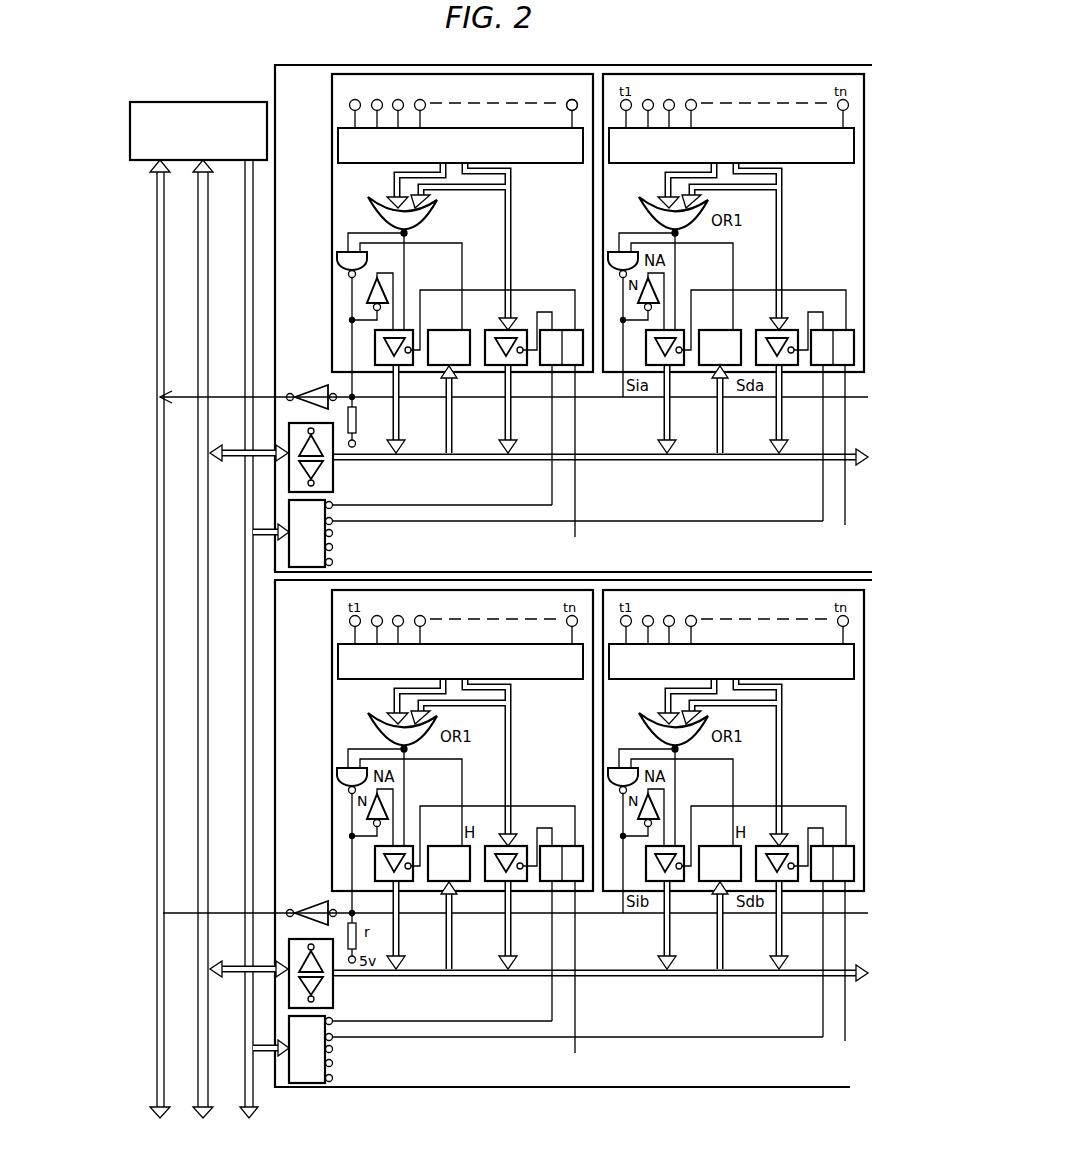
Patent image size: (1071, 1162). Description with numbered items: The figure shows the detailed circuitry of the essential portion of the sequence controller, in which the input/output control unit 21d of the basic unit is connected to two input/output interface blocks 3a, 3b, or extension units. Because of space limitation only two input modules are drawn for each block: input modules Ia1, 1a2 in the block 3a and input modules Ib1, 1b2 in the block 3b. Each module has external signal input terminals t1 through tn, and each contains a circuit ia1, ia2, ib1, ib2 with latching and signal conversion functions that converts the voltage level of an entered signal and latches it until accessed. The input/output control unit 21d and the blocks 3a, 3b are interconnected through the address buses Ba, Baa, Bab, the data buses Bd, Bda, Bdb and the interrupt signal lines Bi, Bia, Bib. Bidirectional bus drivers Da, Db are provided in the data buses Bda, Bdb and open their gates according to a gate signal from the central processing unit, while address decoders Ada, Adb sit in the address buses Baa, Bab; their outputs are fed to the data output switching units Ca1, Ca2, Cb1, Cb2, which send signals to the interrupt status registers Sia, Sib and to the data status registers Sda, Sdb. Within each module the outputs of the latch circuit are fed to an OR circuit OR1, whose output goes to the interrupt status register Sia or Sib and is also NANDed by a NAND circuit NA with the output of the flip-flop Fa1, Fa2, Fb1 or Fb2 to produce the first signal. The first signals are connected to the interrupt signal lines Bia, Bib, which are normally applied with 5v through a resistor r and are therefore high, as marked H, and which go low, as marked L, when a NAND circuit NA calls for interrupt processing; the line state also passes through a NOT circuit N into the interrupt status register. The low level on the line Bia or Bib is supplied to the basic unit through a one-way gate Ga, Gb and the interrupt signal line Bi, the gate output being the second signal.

The input/output control unit 21d is at (193, 102).
The input/output interface block 3a is at (650, 65).
The input/output interface block 3b is at (593, 1087).
The input module Ia1 is at (330, 99).
The input module 1a2 is at (733, 203).
The input module Ib1 is at (438, 740).
The input module 1b2 is at (733, 718).
The latch circuit ia1 is at (460, 145).
The latch circuit ia2 is at (731, 145).
The latch circuit ib1 is at (460, 661).
The latch circuit ib2 is at (731, 661).
The external signal input terminal t1 is at (463, 106).
The external signal input terminal tn is at (570, 97).
The OR circuit OR1 is at (420, 216).
The NAND circuit NA is at (366, 265).
The NOT circuit N is at (372, 294).
The flip-flop Fa1 is at (449, 347).
The flip-flop Fa2 is at (720, 347).
The flip-flop Fb1 is at (449, 863).
The flip-flop Fb2 is at (720, 863).
The high level signal H is at (469, 317).
The low level signal L is at (739, 317).
The data output switching unit Ca1 is at (570, 329).
The data output switching unit Ca2 is at (831, 317).
The data output switching unit Cb1 is at (560, 833).
The data output switching unit Cb2 is at (831, 833).
The interrupt status register Sia is at (384, 362).
The data status register Sda is at (496, 362).
The interrupt status register Sib is at (384, 878).
The data status register Sdb is at (496, 878).
The interrupt signal line Bia is at (181, 395).
The interrupt signal line Bib is at (515, 931).
The one-way gate Ga is at (310, 390).
The one-way gate Gb is at (310, 904).
The resistor r is at (359, 421).
The 5V supply 5v is at (367, 445).
The bidirectional bus driver Da is at (337, 480).
The bidirectional bus driver Db is at (539, 973).
The address decoder Ada is at (549, 466).
The address decoder Adb is at (549, 982).
The data bus Bda is at (227, 463).
The address bus Baa is at (262, 530).
The data bus Bdb is at (172, 997).
The address bus Bab is at (190, 1035).
The interrupt signal line Bi is at (166, 622).
The data bus Bd is at (198, 558).
The address bus Ba is at (247, 320).